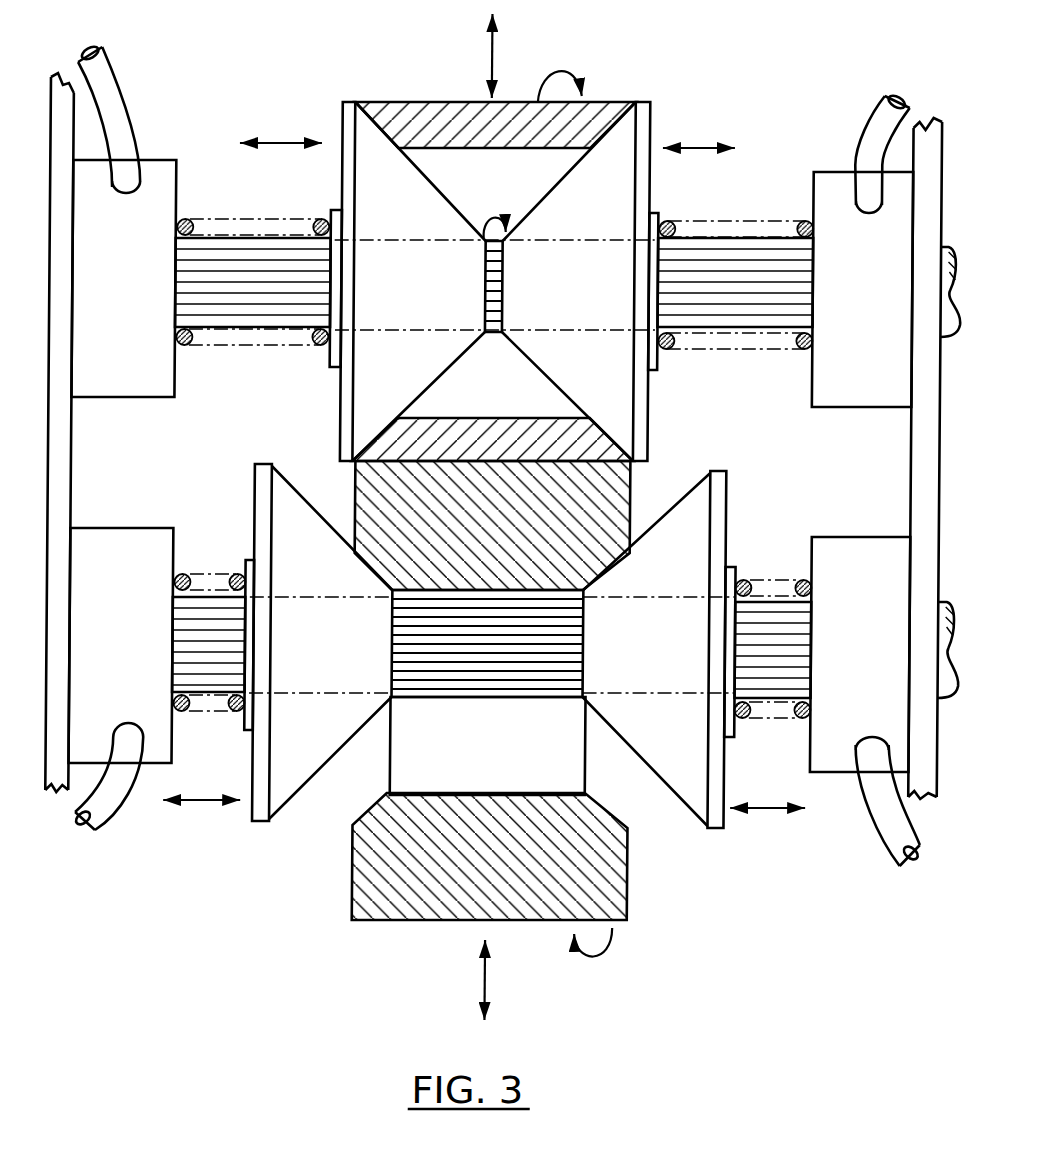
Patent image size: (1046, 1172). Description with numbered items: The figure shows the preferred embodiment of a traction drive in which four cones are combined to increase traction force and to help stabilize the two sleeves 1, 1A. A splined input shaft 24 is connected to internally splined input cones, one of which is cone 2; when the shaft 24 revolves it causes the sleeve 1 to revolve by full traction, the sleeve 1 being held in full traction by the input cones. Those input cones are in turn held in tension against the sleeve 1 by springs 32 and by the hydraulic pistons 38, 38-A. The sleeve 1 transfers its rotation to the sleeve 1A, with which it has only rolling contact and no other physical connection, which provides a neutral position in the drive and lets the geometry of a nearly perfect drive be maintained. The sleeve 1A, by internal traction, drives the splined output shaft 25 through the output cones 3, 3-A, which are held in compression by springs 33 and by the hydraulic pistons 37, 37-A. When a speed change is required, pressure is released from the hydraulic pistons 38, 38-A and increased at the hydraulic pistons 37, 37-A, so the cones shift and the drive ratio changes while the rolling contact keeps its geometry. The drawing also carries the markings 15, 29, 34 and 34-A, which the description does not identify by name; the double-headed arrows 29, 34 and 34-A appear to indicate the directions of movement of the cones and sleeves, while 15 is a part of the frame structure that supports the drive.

The sleeve 1 is at (830, 195).
The sleeve 1A is at (366, 920).
The cone 2 is at (366, 173).
The output cone 3 is at (294, 523).
The output cone 3-A is at (675, 522).
The bearing block 15 is at (839, 774).
The splined input shaft 24 is at (945, 245).
The splined output shaft 25 is at (961, 700).
The axial movement arrow 29 is at (487, 457).
The springs 32 is at (184, 216).
The springs 33 is at (184, 572).
The vertical movement arrow 34 is at (512, 56).
The vertical movement arrow 34-A is at (548, 974).
The hydraulic piston 37 is at (116, 815).
The hydraulic piston 37-A is at (887, 825).
The hydraulic piston 38 is at (101, 82).
The hydraulic piston 38-A is at (855, 150).